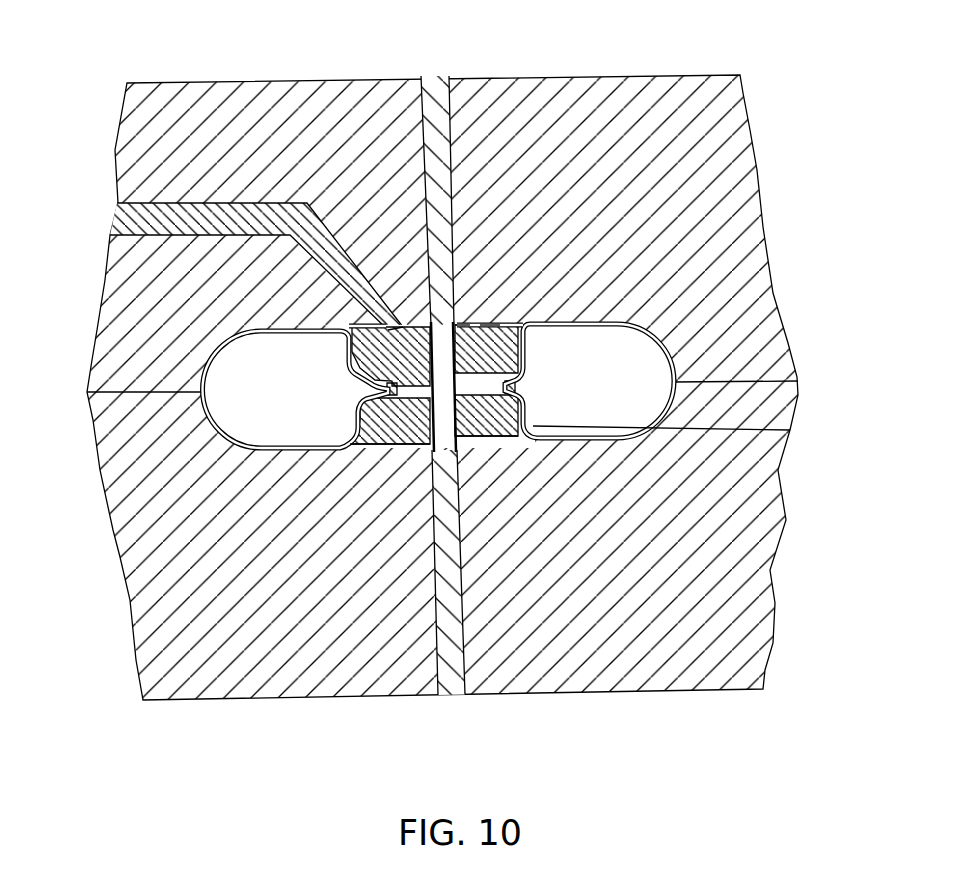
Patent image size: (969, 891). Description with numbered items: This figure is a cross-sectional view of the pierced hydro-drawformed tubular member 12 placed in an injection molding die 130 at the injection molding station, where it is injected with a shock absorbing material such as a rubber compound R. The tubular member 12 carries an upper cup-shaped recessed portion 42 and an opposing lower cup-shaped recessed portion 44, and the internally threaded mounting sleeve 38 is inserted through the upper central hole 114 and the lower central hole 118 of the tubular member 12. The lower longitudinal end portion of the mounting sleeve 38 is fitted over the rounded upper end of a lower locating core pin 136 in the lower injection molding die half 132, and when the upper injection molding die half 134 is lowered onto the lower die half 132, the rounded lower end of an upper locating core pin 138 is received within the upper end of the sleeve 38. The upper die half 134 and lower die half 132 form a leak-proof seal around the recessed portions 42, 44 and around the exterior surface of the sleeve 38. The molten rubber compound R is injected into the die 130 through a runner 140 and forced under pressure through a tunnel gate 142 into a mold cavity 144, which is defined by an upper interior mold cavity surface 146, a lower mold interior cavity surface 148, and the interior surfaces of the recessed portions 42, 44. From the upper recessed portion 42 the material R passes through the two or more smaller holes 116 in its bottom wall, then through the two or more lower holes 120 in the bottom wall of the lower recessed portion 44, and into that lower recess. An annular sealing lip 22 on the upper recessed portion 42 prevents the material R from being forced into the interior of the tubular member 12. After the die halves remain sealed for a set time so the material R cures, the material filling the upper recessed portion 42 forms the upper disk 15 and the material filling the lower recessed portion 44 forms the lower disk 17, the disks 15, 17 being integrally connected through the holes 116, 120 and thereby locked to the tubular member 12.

The injection molding die 130 is at (624, 70).
The upper injection molding die half 134 is at (757, 180).
The lower injection molding die half 132 is at (786, 480).
The upper locating core pin 138 is at (435, 74).
The lower locating core pin 136 is at (452, 684).
The runner 140 is at (117, 217).
The rubber compound R is at (245, 215).
The hydro-drawformed tubular member 12 is at (629, 342).
The upper interior mold cavity surface 146 is at (530, 322).
The lower mold interior cavity surface 148 is at (783, 430).
The tunnel gate 142 is at (347, 337).
The mold cavity 144 is at (357, 372).
The upper cup-shaped recessed portion 42 is at (517, 350).
The annular sealing lip 22 is at (513, 385).
The lower cup-shaped recessed portion 44 is at (523, 425).
The lower disk 17 is at (346, 452).
The smaller holes 116 is at (405, 327).
The upper central hole 114 is at (462, 325).
The upper disk 15 is at (488, 325).
The lower central hole 118 is at (463, 440).
The lower holes 120 is at (388, 450).
The mounting sleeve 38 is at (445, 467).